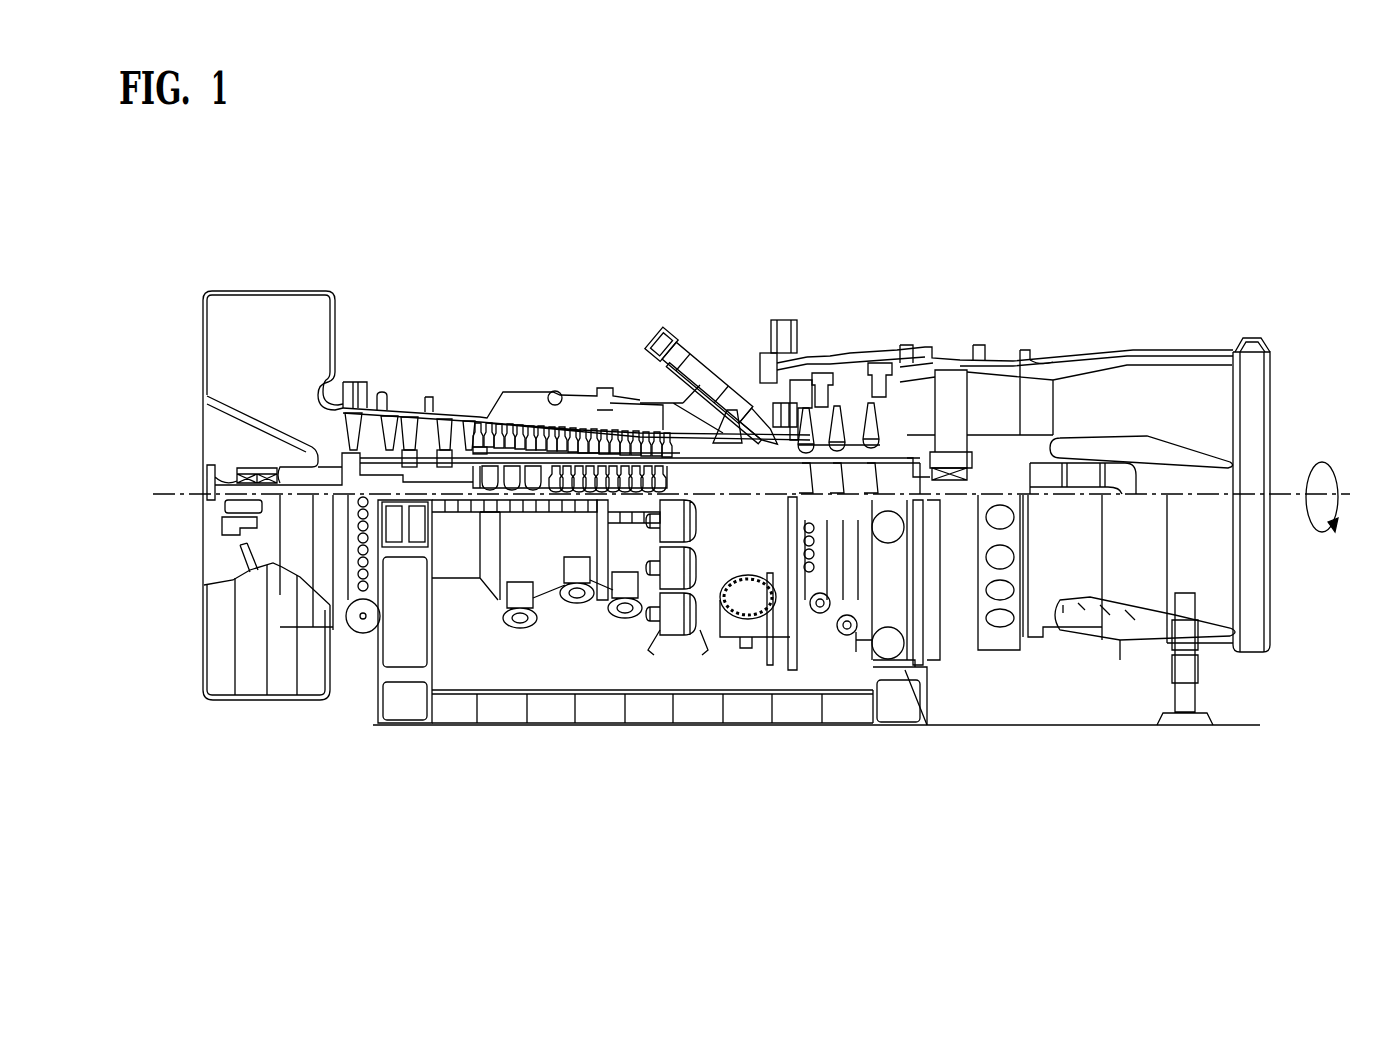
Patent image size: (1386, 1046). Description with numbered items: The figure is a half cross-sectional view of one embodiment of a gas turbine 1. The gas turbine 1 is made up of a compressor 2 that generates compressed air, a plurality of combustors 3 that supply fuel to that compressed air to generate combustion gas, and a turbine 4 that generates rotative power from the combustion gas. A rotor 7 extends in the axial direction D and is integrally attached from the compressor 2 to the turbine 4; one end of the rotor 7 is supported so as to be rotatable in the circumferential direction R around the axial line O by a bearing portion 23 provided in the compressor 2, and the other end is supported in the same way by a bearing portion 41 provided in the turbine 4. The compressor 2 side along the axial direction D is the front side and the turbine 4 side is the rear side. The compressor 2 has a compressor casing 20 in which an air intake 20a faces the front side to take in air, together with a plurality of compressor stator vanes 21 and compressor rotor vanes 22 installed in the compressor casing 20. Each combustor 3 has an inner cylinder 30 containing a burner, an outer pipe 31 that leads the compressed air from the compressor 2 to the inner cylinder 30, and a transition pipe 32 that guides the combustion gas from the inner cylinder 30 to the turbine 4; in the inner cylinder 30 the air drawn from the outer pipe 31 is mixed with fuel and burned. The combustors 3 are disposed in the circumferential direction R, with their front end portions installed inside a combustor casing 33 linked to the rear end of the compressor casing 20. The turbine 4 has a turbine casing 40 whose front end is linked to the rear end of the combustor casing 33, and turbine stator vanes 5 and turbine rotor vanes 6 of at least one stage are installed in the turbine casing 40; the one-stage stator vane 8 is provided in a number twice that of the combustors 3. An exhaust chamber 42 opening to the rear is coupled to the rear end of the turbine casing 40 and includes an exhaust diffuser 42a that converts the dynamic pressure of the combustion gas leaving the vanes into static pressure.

The gas turbine 1 is at (1292, 291).
The compressor 2 is at (576, 354).
The compressor casing 20 is at (575, 415).
The air intake 20a is at (240, 337).
The compressor stator vanes 21 is at (408, 420).
The compressor rotor vanes 22 is at (460, 445).
The bearing portion 23 is at (245, 469).
The combustor 3 is at (714, 330).
The inner cylinder 30 is at (702, 364).
The outer pipe 31 is at (672, 338).
The transition pipe 32 is at (750, 392).
The combustor casing 33 is at (740, 392).
The turbine 4 is at (1011, 363).
The turbine casing 40 is at (838, 395).
The bearing portion 41 is at (978, 462).
The exhaust chamber 42 is at (1178, 347).
The exhaust diffuser 42a is at (995, 393).
The turbine stator vanes 5 is at (860, 400).
The turbine rotor vanes 6 is at (863, 420).
The rotor 7 is at (700, 475).
The one-stage stator vane 8 is at (792, 410).
The axial line O is at (168, 493).
The circumferential direction R is at (1314, 462).
The axial direction D is at (627, 803).